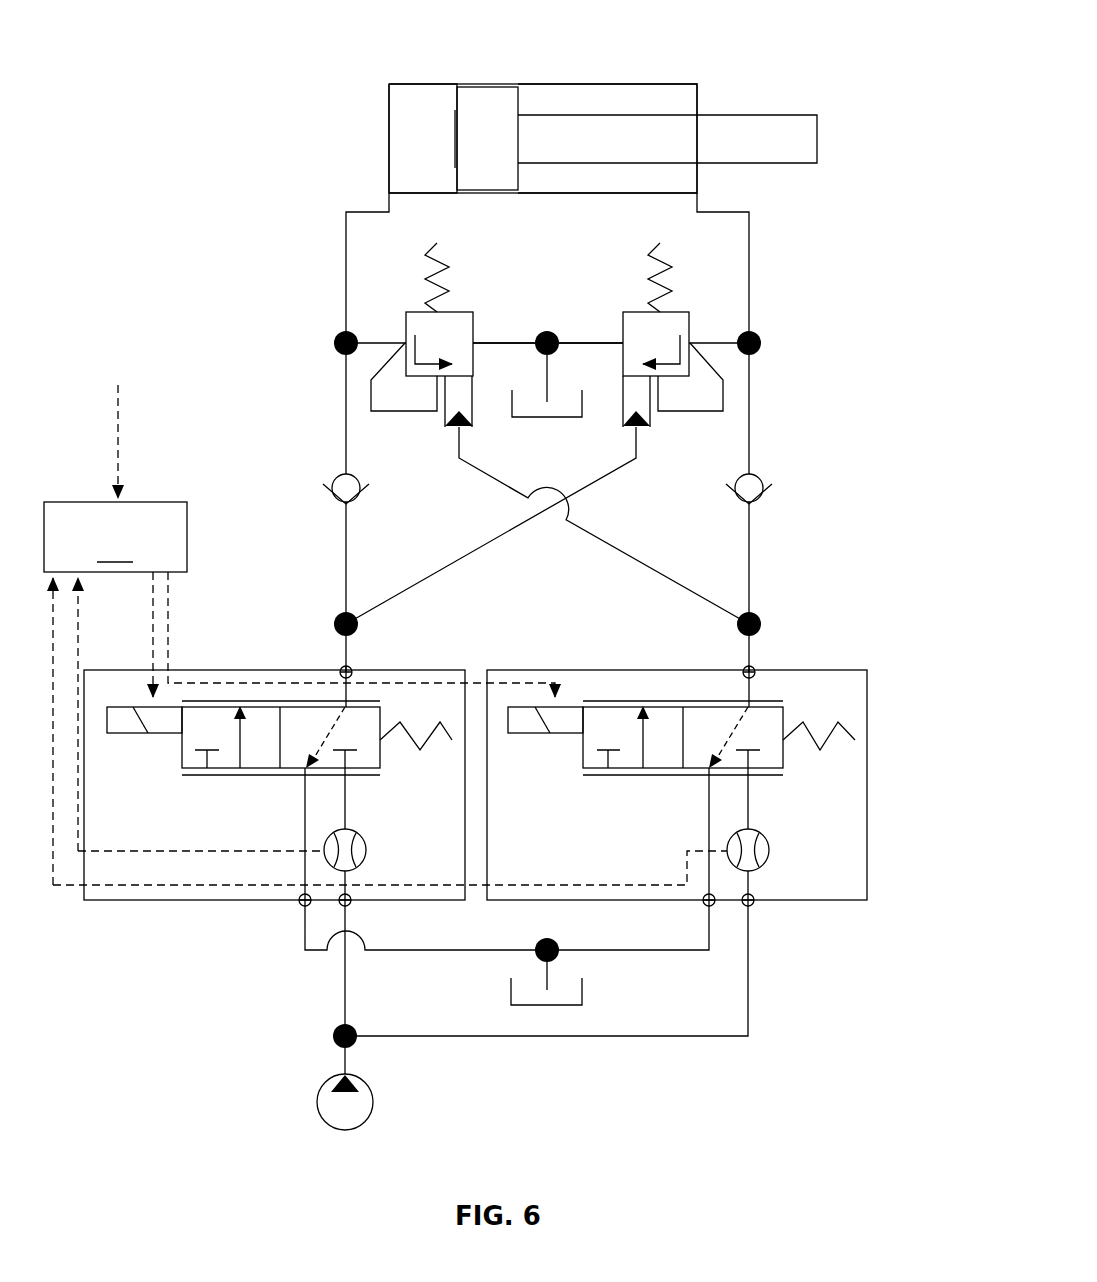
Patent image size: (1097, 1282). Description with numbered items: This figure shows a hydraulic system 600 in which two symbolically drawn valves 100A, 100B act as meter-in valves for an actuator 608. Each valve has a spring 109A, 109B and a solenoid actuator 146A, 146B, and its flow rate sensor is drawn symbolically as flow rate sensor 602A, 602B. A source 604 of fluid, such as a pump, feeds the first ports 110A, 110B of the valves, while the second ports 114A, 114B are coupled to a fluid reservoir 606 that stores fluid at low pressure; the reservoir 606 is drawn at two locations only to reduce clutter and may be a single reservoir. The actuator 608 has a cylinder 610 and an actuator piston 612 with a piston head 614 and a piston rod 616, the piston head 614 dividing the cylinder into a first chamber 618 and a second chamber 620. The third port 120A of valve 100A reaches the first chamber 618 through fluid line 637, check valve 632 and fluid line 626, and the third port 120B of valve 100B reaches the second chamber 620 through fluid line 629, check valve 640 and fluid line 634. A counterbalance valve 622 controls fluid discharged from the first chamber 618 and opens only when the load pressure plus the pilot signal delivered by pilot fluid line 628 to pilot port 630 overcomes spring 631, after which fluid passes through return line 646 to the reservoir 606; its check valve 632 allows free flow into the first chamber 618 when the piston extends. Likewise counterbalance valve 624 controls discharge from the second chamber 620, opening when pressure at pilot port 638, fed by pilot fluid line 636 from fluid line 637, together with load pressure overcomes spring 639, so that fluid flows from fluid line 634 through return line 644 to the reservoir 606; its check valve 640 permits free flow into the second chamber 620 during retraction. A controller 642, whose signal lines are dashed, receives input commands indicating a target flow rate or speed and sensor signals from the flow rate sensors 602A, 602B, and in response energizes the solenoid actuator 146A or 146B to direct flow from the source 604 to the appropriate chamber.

The hydraulic system 600 is at (182, 200).
The source 604 is at (318, 1094).
The fluid reservoir 606 is at (553, 428).
The actuator 608 is at (402, 78).
The cylinder 610 is at (388, 130).
The actuator piston 612 is at (452, 168).
The piston head 614 is at (493, 112).
The piston rod 616 is at (767, 114).
The first chamber 618 is at (437, 106).
The second chamber 620 is at (663, 104).
The counterbalance valve 622 is at (463, 298).
The counterbalance valve 624 is at (626, 282).
The fluid line 626 is at (345, 272).
The pilot fluid line 628 is at (590, 535).
The fluid line 629 is at (751, 552).
The pilot port 630 is at (452, 432).
The spring 631 is at (432, 258).
The check valve 632 is at (332, 496).
The fluid line 634 is at (752, 288).
The pilot fluid line 636 is at (458, 560).
The fluid line 637 is at (345, 552).
The pilot port 638 is at (640, 432).
The spring 639 is at (668, 251).
The check valve 640 is at (766, 492).
The controller 642 is at (385, 617).
The return line 644 is at (575, 343).
The return line 646 is at (520, 343).
The valve 100A is at (147, 662).
The valve 100B is at (814, 662).
The spring 109A is at (412, 755).
The spring 109B is at (817, 752).
The first port 110A is at (353, 911).
The first port 110B is at (755, 911).
The second port 114A is at (298, 911).
The second port 114B is at (704, 911).
The third port 120A is at (340, 662).
The third port 120B is at (743, 662).
The solenoid actuator 146A is at (148, 741).
The solenoid actuator 146B is at (543, 741).
The flow rate sensor 602A is at (422, 840).
The flow rate sensor 602B is at (769, 848).